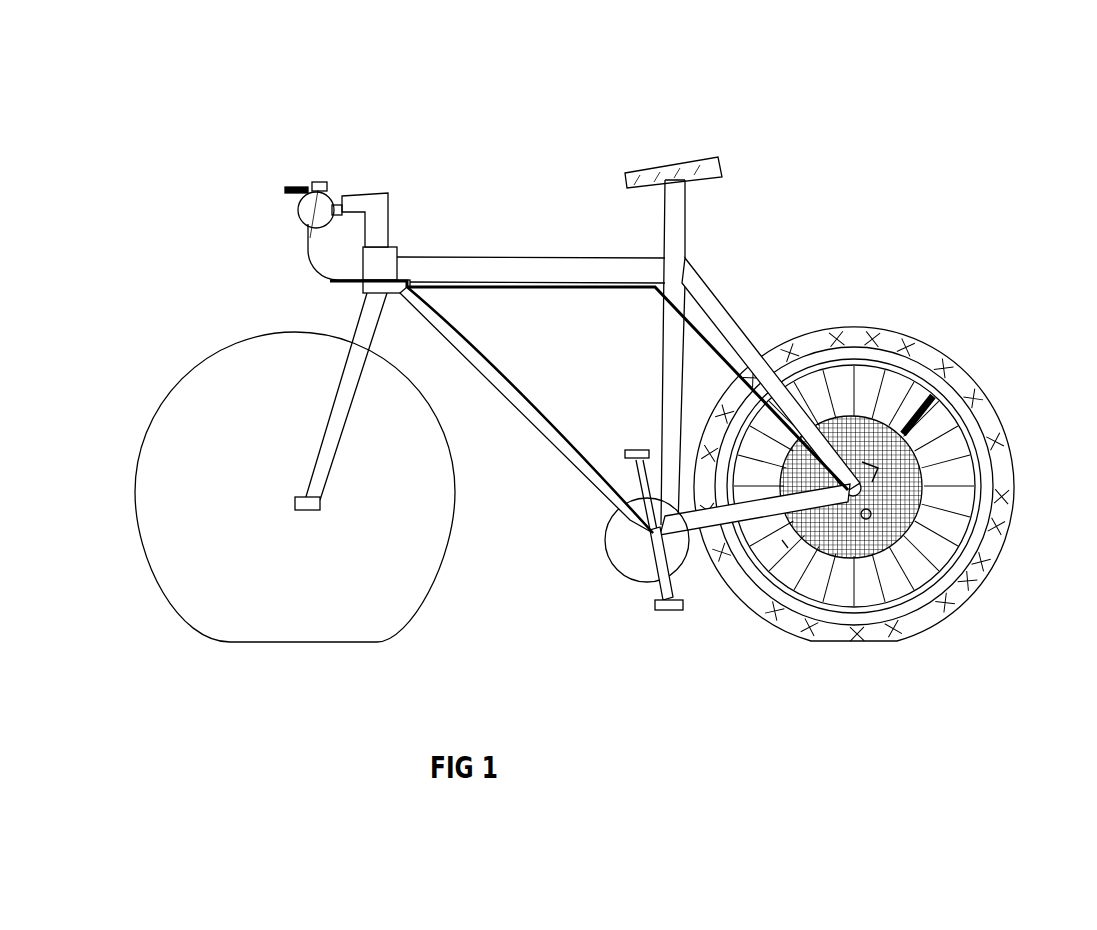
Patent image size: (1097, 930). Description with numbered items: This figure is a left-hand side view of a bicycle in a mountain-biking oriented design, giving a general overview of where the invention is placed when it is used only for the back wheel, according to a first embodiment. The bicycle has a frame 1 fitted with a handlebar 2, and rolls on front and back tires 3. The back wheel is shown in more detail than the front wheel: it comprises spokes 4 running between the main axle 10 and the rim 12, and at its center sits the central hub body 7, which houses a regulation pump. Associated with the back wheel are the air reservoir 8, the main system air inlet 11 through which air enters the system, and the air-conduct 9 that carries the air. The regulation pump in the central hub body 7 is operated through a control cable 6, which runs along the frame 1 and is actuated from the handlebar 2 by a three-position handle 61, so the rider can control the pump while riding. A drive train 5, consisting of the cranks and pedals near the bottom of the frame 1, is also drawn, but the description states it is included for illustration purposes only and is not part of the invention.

The frame 1 is at (513, 257).
The handlebar 2 is at (337, 196).
The front and back tires 3 is at (257, 340).
The spokes 4 is at (947, 490).
The drive train 5 is at (612, 563).
The control cable 6 is at (703, 327).
The central hub body 7 is at (872, 466).
The air reservoir 8 is at (916, 522).
The air-conduct 9 is at (917, 428).
The main axle 10 is at (872, 519).
The main system air inlet 11 is at (778, 543).
The rim 12 is at (820, 357).
The 3-position handle 61 is at (295, 184).